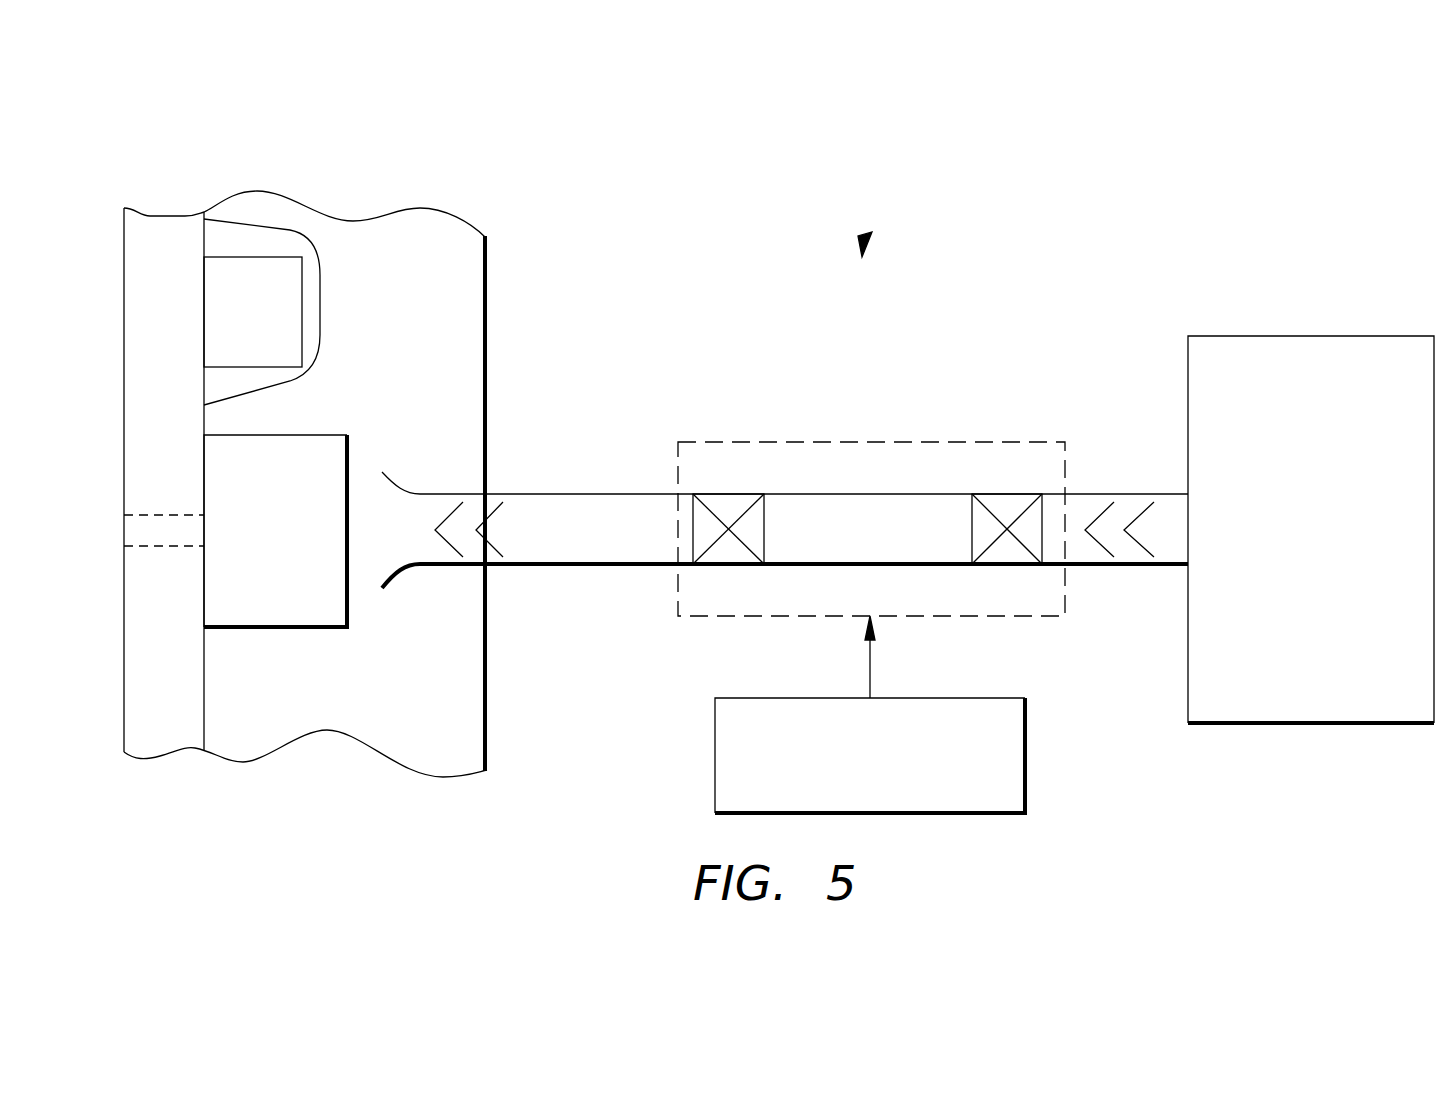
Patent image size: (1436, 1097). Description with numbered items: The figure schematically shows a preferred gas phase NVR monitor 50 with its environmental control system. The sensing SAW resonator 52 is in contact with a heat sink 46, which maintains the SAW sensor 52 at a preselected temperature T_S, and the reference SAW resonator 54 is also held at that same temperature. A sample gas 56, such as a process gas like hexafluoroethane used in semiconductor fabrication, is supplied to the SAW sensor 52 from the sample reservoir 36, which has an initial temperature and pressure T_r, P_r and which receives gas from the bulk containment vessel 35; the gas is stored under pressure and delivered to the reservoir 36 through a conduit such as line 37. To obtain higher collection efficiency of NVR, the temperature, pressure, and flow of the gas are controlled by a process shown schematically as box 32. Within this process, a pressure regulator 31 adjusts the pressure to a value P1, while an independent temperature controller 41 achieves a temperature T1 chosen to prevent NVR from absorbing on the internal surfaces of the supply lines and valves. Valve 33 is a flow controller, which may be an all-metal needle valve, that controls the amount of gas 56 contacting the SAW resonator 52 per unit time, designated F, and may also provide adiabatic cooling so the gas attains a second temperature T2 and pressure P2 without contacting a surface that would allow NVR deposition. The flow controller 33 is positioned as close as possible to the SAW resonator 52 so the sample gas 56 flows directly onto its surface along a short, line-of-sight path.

The heat sink 46 is at (163, 737).
The reference SAW resonator 54 is at (292, 333).
The sensing SAW resonator 52 is at (270, 605).
The line 37 is at (563, 503).
The sample gas 56 is at (490, 550).
The process box 32 is at (995, 616).
The flow controller 33 is at (719, 492).
The pressure regulator 31 is at (998, 493).
The bulk containment vessel 35 is at (853, 500).
The temperature controller 41 is at (1027, 752).
The sample reservoir 36 is at (1276, 336).
The gas phase NVR monitor 50 is at (866, 235).